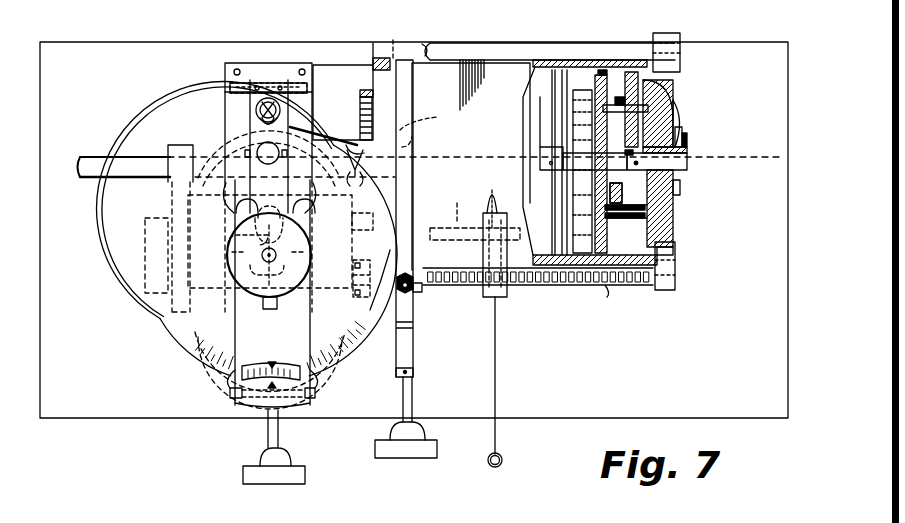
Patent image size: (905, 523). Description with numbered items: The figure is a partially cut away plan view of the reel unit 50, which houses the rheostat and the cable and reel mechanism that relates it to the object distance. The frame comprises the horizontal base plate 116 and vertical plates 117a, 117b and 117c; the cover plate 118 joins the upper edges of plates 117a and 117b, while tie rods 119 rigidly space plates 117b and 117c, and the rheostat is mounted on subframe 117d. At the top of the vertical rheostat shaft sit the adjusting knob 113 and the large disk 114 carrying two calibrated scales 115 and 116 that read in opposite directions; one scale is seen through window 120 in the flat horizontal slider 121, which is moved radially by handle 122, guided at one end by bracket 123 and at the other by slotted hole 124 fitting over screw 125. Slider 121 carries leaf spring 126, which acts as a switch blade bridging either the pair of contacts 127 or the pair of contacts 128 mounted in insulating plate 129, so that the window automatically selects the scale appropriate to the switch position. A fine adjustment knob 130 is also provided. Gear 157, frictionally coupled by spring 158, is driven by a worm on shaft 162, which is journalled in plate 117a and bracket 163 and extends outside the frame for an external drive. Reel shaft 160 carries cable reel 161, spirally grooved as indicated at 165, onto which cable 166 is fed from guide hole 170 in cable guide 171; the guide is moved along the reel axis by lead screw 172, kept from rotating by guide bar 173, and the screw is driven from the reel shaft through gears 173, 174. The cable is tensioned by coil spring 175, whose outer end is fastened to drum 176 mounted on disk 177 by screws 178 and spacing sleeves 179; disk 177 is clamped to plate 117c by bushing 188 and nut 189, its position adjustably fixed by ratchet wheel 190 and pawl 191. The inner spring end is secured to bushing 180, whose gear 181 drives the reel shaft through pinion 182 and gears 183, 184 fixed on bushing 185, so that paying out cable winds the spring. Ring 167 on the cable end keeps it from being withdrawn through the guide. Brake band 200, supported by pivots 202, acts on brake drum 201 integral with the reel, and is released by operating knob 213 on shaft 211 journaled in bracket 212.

The reel unit 50 is at (168, 432).
The rheostat adjusting knob 113 is at (240, 215).
The large disk 114 is at (166, 312).
The calibrated scale 115 is at (197, 334).
The horizontal base plate 116 is at (187, 350).
The vertical plate 117a is at (180, 140).
The vertical plate 117b is at (382, 93).
The vertical plate 117c is at (674, 254).
The subframe 117d is at (362, 212).
The cover plate 118 is at (210, 112).
The tie rods 119 is at (489, 44).
The window 120 is at (290, 358).
The flat horizontal slider 121 is at (312, 328).
The handle 122 is at (356, 124).
The bracket 123 is at (314, 394).
The slotted hole 124 is at (360, 98).
The screw 125 is at (256, 108).
The leaf spring 126 is at (265, 82).
The electrical contacts 127 is at (300, 70).
The electrical contacts 128 is at (233, 70).
The insulating plate 129 is at (247, 72).
The knob 130 is at (304, 474).
The gear 157 is at (230, 191).
The spring 158 is at (307, 214).
The shaft 160 is at (415, 144).
The cable reel 161 is at (538, 64).
The shaft 162 is at (122, 148).
The bracket 163 is at (323, 135).
The spiral grooves 165 is at (466, 118).
The cable 166 is at (506, 346).
The ring 167 is at (513, 458).
The guide hole 170 is at (484, 260).
The cable guide 171 is at (508, 294).
The lead screw 172 is at (586, 286).
The guide bar 173 is at (457, 204).
The gear 174 is at (383, 330).
The coil spring 175 is at (590, 65).
The drum 176 is at (624, 84).
The disk 177 is at (666, 80).
The screws 178 is at (666, 240).
The spacing sleeves 179 is at (676, 112).
The bushing 180 is at (586, 160).
The gear 181 is at (675, 218).
The pinion 182 is at (680, 201).
The gear 183 is at (616, 90).
The gear 184 is at (612, 54).
The bushing 185 is at (669, 94).
The bushing 188 is at (677, 198).
The nut 189 is at (684, 137).
The ratchet wheel 190 is at (680, 129).
The pawl 191 is at (673, 205).
The brake band 200 is at (414, 94).
The brake drum 201 is at (423, 123).
The pivots 202 is at (394, 57).
The shaft 211 is at (414, 394).
The bracket 212 is at (414, 350).
The operating knob 213 is at (417, 459).